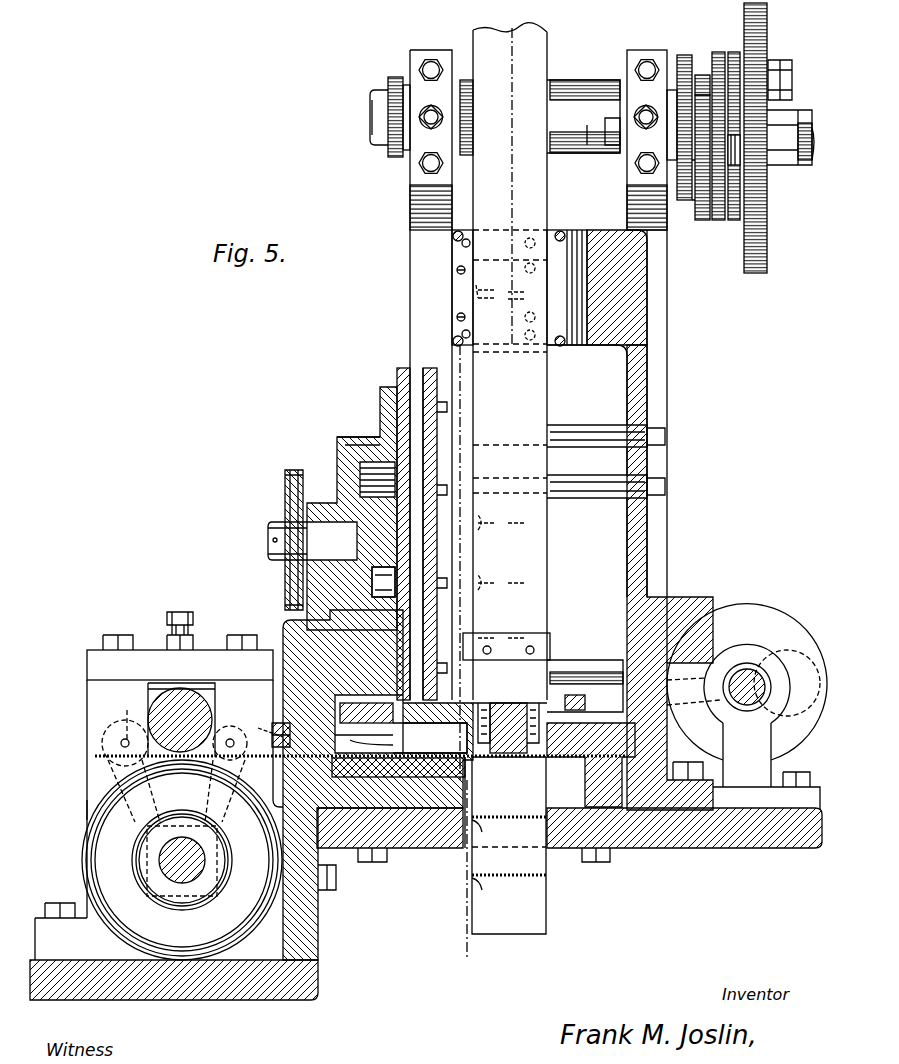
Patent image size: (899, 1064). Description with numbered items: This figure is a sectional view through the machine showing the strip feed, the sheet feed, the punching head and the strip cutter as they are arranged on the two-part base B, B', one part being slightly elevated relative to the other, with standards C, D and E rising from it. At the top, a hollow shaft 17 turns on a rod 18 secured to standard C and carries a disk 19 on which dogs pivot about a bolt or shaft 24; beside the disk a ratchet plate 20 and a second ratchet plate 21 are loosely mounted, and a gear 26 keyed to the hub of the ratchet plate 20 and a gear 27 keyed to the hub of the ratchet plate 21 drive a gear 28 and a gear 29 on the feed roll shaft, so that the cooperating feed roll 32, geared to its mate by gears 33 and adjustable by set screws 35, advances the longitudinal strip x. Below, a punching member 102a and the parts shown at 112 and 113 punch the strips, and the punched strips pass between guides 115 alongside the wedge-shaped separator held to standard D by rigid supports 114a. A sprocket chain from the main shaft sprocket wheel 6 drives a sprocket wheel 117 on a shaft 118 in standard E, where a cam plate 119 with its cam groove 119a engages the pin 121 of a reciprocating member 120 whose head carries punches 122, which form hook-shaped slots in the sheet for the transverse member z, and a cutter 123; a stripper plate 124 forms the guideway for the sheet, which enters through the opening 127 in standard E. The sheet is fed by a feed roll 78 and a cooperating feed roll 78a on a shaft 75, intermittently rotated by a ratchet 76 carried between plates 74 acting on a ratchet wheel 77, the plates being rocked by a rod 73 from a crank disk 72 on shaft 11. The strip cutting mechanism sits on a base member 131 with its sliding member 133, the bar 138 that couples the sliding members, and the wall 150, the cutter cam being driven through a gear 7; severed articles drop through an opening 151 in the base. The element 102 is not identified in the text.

The sprocket wheel 6 is at (475, 20).
The guides 115 is at (540, 605).
The standard C is at (410, 273).
The set screws 35 is at (433, 112).
The feed roll 32 is at (561, 90).
The gears 33 is at (392, 152).
The gear 28 is at (683, 62).
The gear 29 is at (700, 75).
The gear 27 is at (700, 220).
The gear 26 is at (688, 200).
The second ratchet plate 21 is at (718, 220).
The ratchet plate 20 is at (734, 220).
The disk 19 is at (760, 45).
The bolt or shaft 24 is at (792, 80).
The hollow shaft 17 is at (790, 122).
The rod 18 is at (810, 162).
The guide strip 102 is at (565, 250).
The punching member 102a is at (458, 288).
The punching arrangement 112 is at (484, 290).
The punching arrangement 113 is at (526, 296).
The standard D is at (626, 372).
The rigid supports 114a is at (588, 433).
The reciprocating member 120 is at (402, 366).
The cam plate 119 is at (357, 468).
The cam groove 119a is at (370, 440).
The pin 121 is at (385, 578).
The sprocket wheel 117 is at (293, 470).
The shaft 118 is at (272, 532).
The standard E is at (285, 630).
The punches 122 is at (370, 733).
The stripper plate 124 is at (420, 745).
The cutter 123 is at (470, 765).
The wall 150 is at (545, 790).
The transverse member z is at (533, 886).
The longitudinal member x is at (547, 898).
The opening 151 is at (463, 855).
The plates 74 is at (112, 762).
The base member 131 is at (592, 768).
The sliding member 133 is at (573, 684).
The bar 138 is at (597, 695).
The gear 7 is at (612, 632).
The crank disk 72 is at (772, 612).
The shaft 11 is at (746, 670).
The rod 73 is at (720, 703).
The base part B is at (569, 843).
The ratchet wheel 77 is at (82, 848).
The feed roll 78 is at (135, 920).
The shaft 75 is at (174, 832).
The cooperating feed roll 78a is at (198, 718).
The ratchet 76 is at (174, 755).
The opening 127 is at (283, 726).
The base part B' is at (174, 991).